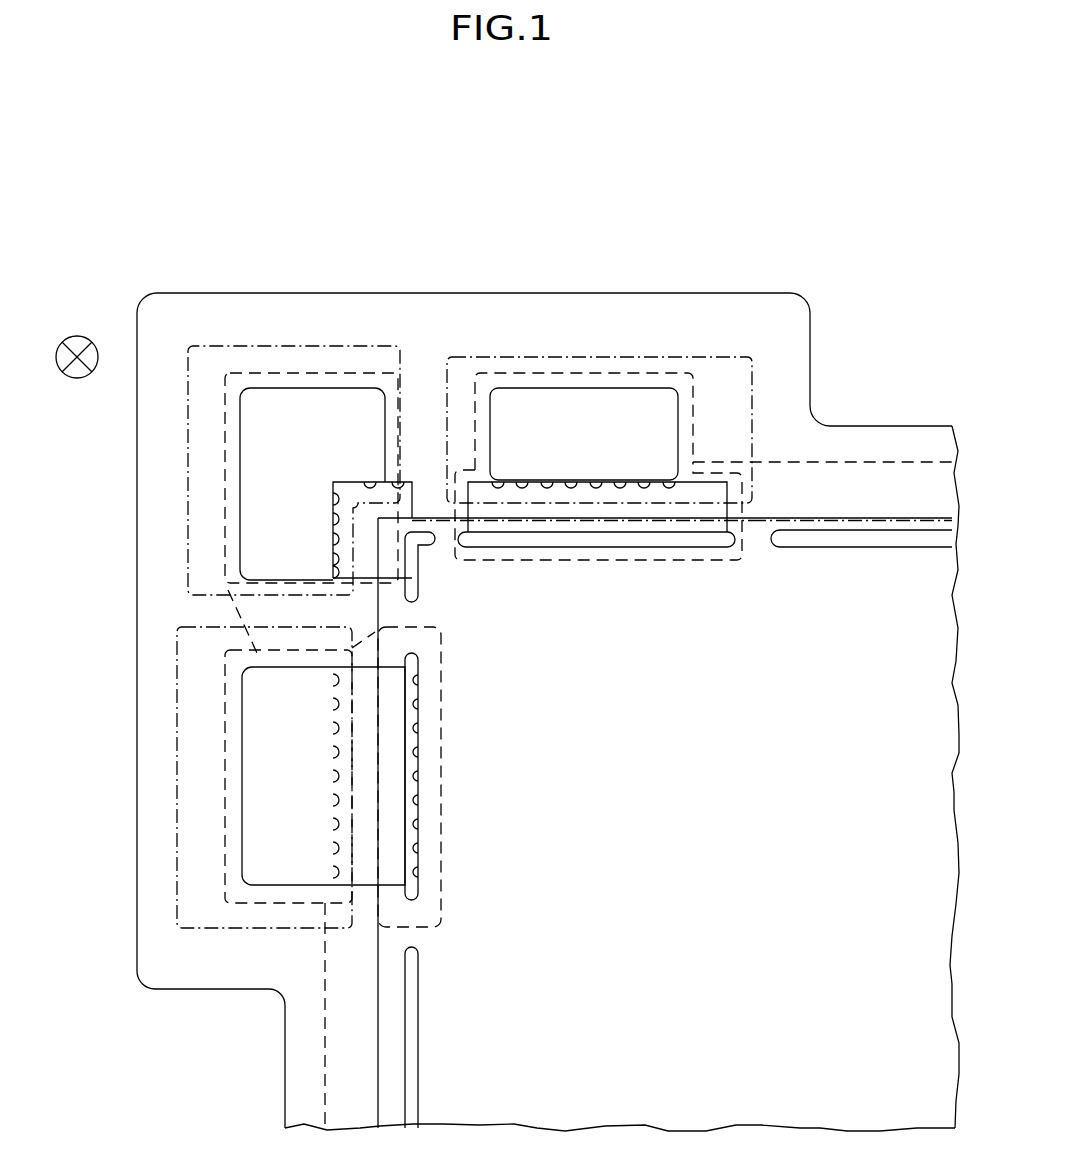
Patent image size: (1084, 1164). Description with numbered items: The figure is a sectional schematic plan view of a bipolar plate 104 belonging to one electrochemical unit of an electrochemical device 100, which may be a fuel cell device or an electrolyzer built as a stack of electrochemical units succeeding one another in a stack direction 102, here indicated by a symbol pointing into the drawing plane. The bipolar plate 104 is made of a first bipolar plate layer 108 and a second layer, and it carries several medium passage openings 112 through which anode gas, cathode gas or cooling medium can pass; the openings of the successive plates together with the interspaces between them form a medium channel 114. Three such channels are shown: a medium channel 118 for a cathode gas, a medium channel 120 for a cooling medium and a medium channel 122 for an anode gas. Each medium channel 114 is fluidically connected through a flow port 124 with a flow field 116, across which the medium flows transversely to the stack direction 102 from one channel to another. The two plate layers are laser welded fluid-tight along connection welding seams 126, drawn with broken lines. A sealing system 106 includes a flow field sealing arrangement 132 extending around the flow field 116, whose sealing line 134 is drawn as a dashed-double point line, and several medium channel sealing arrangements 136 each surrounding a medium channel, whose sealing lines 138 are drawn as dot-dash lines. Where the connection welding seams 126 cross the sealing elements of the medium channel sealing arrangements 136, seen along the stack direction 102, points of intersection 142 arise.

The electrochemical device 100 is at (733, 290).
The stack direction 102 is at (77, 336).
The bipolar plate 104 is at (768, 290).
The sealing system 106 is at (762, 534).
The first bipolar plate layer 108 is at (788, 330).
The medium passage opening 112 is at (307, 452).
The medium channel 114 is at (307, 503).
The flow field 116 is at (688, 818).
The medium channel for a cathode gas 118 is at (302, 842).
The medium channel for a cooling medium 120 is at (307, 553).
The medium channel for an anode gas 122 is at (600, 470).
The flow port 124 is at (355, 490).
The connection welding seam 126 is at (275, 373).
The flow field sealing arrangement 132 is at (842, 534).
The sealing line 134 is at (887, 518).
The medium channel sealing arrangement 136 is at (188, 332).
The sealing line 138 is at (540, 357).
The point of intersection 142 is at (467, 368).